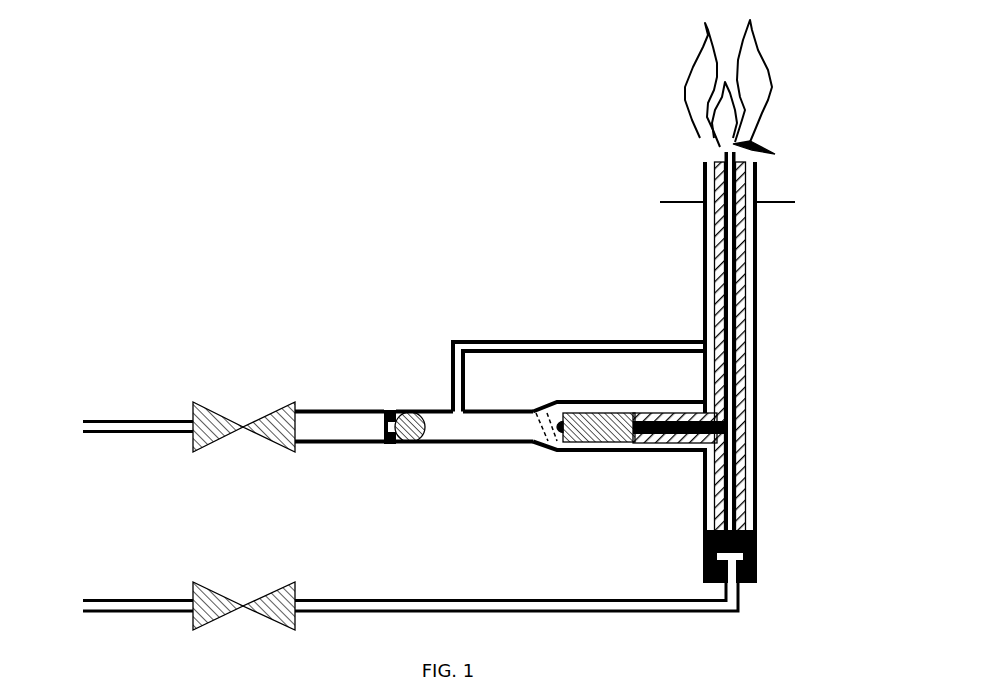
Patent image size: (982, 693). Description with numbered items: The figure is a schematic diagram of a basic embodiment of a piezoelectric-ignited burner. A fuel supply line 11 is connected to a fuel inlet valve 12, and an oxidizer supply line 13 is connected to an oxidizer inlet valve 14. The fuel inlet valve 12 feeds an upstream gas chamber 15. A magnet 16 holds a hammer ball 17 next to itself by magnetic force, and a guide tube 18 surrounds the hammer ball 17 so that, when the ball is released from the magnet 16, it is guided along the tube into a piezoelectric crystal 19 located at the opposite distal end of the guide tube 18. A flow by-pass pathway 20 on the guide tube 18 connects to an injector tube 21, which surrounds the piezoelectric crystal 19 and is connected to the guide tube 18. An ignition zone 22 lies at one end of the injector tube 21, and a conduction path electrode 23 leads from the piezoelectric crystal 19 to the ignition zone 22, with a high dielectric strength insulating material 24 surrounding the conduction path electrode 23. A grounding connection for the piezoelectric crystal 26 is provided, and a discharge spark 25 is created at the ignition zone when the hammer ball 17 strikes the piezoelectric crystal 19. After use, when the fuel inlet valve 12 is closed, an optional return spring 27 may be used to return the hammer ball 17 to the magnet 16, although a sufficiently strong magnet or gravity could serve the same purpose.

The fuel supply line 11 is at (162, 432).
The fuel inlet valve 12 is at (253, 412).
The oxidizer supply line 13 is at (173, 600).
The oxidizer inlet valve 14 is at (253, 593).
The upstream gas chamber 15 is at (352, 422).
The magnet 16 is at (383, 442).
The hammer ball 17 is at (407, 443).
The guide tube 18 is at (472, 443).
The piezoelectric crystal 19 is at (618, 442).
The flow by-pass pathway 20 is at (505, 342).
The injector tube 21 is at (703, 253).
The ignition zone 22 is at (713, 152).
The conduction path electrode 23 is at (705, 478).
The high dielectric strength insulating material 24 is at (737, 367).
The discharge spark 25 is at (758, 142).
The grounding connection for the piezoelectric crystal 26 is at (555, 455).
The return spring 27 is at (543, 420).